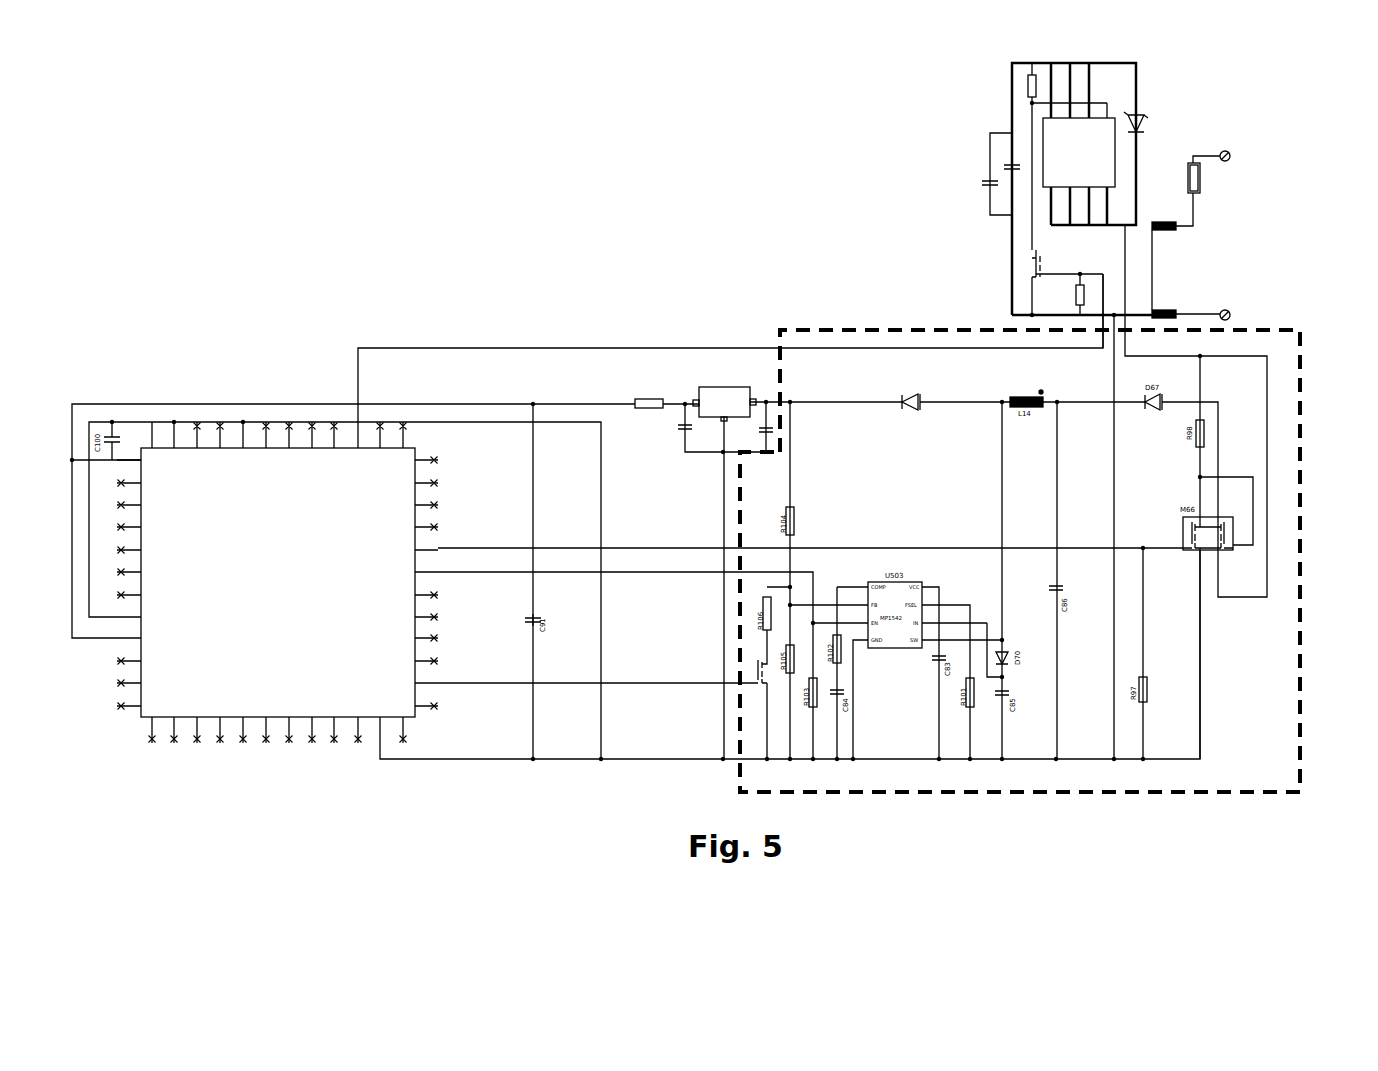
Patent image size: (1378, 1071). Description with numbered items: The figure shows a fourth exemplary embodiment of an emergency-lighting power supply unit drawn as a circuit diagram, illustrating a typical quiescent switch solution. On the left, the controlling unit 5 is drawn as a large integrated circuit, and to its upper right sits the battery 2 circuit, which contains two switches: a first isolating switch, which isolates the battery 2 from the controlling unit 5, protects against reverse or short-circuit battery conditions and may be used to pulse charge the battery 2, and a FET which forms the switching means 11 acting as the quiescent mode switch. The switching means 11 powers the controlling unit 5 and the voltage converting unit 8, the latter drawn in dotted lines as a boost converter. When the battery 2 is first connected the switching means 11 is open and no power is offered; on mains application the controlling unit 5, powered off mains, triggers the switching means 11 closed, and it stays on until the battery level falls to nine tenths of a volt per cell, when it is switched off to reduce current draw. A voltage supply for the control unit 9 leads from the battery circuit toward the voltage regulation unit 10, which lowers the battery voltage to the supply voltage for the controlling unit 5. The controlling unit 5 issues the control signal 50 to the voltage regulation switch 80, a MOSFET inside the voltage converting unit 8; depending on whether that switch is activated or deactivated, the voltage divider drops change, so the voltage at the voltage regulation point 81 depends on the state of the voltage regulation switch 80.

The battery 2 is at (1250, 232).
The controlling unit 5 is at (141, 717).
The voltage converting unit 8 is at (1300, 390).
The voltage supply for control unit 9 is at (473, 402).
The voltage regulation unit 10 is at (710, 388).
The switching means 11 is at (1205, 552).
The control signal 50 is at (505, 683).
The voltage regulation switch 80 is at (753, 683).
The voltage regulation point 81 is at (877, 402).